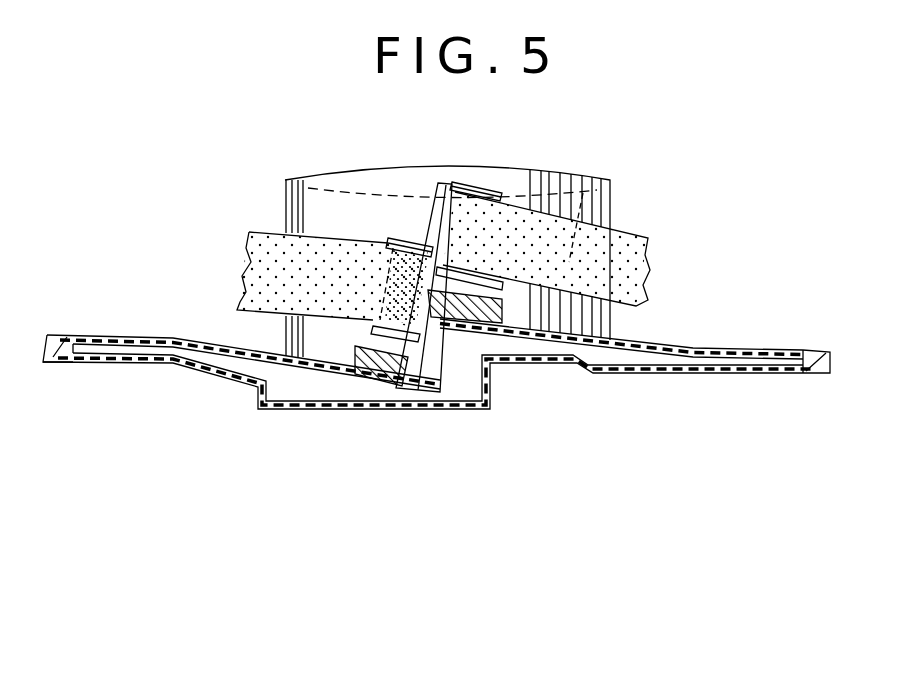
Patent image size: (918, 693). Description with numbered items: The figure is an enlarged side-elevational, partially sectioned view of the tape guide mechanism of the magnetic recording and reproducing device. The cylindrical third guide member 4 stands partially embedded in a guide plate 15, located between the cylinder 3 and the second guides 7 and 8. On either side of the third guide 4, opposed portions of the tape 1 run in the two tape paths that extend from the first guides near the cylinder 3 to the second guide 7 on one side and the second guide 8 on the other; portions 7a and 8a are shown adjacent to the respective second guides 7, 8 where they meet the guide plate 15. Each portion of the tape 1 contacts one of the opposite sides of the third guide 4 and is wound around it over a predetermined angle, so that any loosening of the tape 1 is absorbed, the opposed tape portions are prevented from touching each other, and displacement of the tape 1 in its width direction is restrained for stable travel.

The tape 1 is at (249, 271).
The cylinder 3 is at (311, 188).
The third guide member 4 is at (450, 338).
The second guide 7 is at (488, 222).
The holder flange 7a is at (490, 330).
The second guide 8 is at (393, 282).
The holder flange 8a is at (355, 348).
The guide plate 15 is at (672, 376).